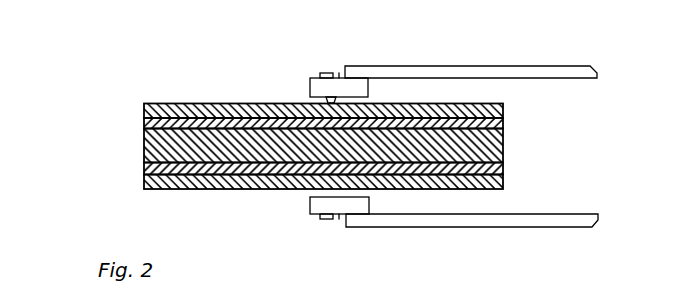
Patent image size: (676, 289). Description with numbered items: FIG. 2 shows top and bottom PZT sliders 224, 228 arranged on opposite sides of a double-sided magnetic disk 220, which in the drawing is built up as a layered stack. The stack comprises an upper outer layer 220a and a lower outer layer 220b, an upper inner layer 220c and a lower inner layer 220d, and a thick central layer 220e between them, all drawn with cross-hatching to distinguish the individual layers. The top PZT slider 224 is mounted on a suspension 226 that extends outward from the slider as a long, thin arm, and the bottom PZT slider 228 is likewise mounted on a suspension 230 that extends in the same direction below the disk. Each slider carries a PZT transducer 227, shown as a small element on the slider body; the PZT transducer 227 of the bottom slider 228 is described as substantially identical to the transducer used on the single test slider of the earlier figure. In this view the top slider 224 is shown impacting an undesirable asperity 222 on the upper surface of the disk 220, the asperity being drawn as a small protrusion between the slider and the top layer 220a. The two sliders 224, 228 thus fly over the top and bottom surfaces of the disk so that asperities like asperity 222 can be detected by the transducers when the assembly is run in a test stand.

The multilayer capacitor body 220 is at (268, 124).
The outer layer 220a is at (144, 110).
The outer layer 220b is at (144, 182).
The inner layer 220c is at (144, 122).
The inner layer 220d is at (144, 170).
The core layer 220e is at (144, 146).
The undesirable asperity 222 is at (326, 100).
The top PZT slider 224 is at (339, 76).
The suspension 226 is at (513, 66).
The PZT transducer 227 is at (322, 73).
The bottom PZT slider 228 is at (339, 216).
The suspension 230 is at (513, 228).